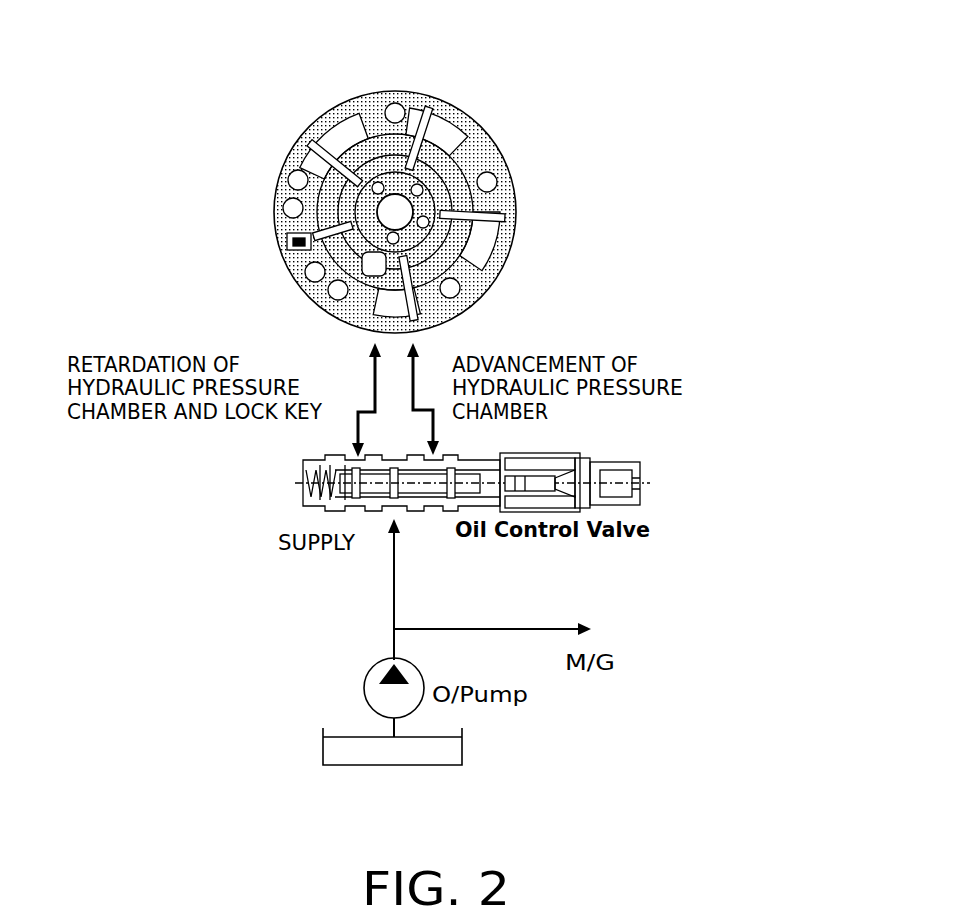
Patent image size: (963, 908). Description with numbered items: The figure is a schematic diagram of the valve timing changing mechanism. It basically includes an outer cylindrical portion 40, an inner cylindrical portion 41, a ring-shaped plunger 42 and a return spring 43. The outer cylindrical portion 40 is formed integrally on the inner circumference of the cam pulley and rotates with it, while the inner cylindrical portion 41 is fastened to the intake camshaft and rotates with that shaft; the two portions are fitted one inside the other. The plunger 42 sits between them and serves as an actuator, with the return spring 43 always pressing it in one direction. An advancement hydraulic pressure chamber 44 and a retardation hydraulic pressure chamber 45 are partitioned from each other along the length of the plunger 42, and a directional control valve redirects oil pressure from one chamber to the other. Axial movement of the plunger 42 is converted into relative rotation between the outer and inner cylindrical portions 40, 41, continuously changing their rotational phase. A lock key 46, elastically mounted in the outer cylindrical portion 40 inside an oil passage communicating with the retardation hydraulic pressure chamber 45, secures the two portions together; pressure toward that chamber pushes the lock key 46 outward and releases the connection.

The outer cylindrical portion 40 is at (488, 152).
The inner cylindrical portion 41 is at (465, 305).
The ring-shaped plunger 42 is at (580, 455).
The return spring 43 is at (307, 492).
The advancement hydraulic pressure chamber 44 is at (453, 122).
The retardation hydraulic pressure chamber 45 is at (425, 113).
The lock key 46 is at (282, 238).